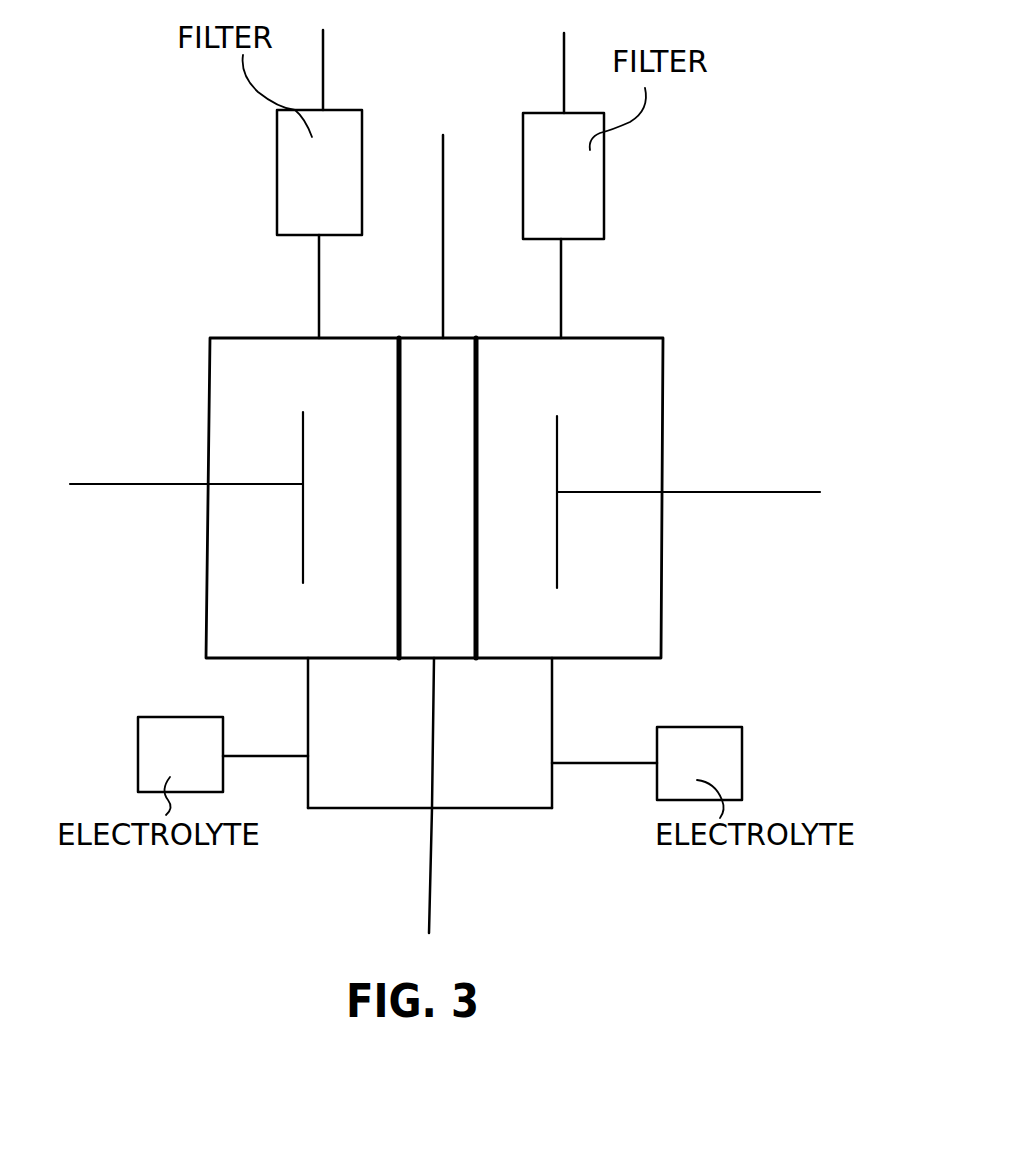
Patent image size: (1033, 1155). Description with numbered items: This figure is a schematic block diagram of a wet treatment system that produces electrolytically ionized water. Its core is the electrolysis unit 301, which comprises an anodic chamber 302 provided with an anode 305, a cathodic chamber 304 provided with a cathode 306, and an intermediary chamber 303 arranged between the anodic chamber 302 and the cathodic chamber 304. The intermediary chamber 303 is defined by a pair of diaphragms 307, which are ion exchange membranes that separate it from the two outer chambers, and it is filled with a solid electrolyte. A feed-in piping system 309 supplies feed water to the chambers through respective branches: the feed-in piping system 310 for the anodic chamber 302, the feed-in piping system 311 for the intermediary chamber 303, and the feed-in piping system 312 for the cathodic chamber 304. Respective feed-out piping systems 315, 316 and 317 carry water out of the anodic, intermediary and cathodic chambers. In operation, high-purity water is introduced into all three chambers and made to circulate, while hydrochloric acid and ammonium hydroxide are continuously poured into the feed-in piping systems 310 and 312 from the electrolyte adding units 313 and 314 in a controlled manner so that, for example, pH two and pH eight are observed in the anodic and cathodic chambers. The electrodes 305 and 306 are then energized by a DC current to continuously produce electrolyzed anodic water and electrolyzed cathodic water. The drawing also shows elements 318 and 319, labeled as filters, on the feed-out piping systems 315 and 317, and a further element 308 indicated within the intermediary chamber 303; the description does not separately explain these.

The electrolysis unit 301 is at (205, 520).
The anodic chamber 302 is at (368, 498).
The intermediary chamber 303 is at (438, 529).
The cathodic chamber 304 is at (508, 498).
The anode 305 is at (300, 473).
The cathode 306 is at (560, 465).
The diaphragms 307 is at (472, 453).
The central compartment inlet 308 is at (452, 370).
The feed-in piping system 309 is at (430, 828).
The feed-in piping system for the anodic chamber 310 is at (312, 768).
The feed-in piping system for the intermediary chamber 311 is at (435, 780).
The feed-in piping system for the cathodic chamber 312 is at (556, 708).
The electrolyte adding unit 313 is at (138, 747).
The electrolyte adding unit 314 is at (742, 757).
The feed-out piping system 315 is at (316, 308).
The feed-out piping system 316 is at (443, 183).
The feed-out piping system 317 is at (562, 301).
The first filter 318 is at (277, 163).
The second filter 319 is at (604, 176).